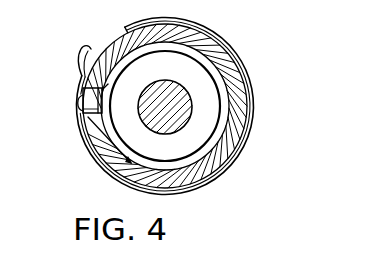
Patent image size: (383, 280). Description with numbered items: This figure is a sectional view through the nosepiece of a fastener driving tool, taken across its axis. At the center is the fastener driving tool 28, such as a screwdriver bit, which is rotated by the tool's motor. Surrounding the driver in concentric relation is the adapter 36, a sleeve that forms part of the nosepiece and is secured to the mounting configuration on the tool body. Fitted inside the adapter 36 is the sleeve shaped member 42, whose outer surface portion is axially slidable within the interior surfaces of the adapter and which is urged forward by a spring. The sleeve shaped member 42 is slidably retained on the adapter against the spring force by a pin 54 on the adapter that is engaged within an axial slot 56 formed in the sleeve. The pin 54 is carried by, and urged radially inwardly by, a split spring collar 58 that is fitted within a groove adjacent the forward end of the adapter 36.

The split spring collar 58 is at (199, 27).
The adapter 36 is at (231, 70).
The sleeve shaped member 42 is at (225, 125).
The fastener driving tool 28 is at (185, 129).
The pin 54 is at (86, 121).
The axial slot 56 is at (108, 87).